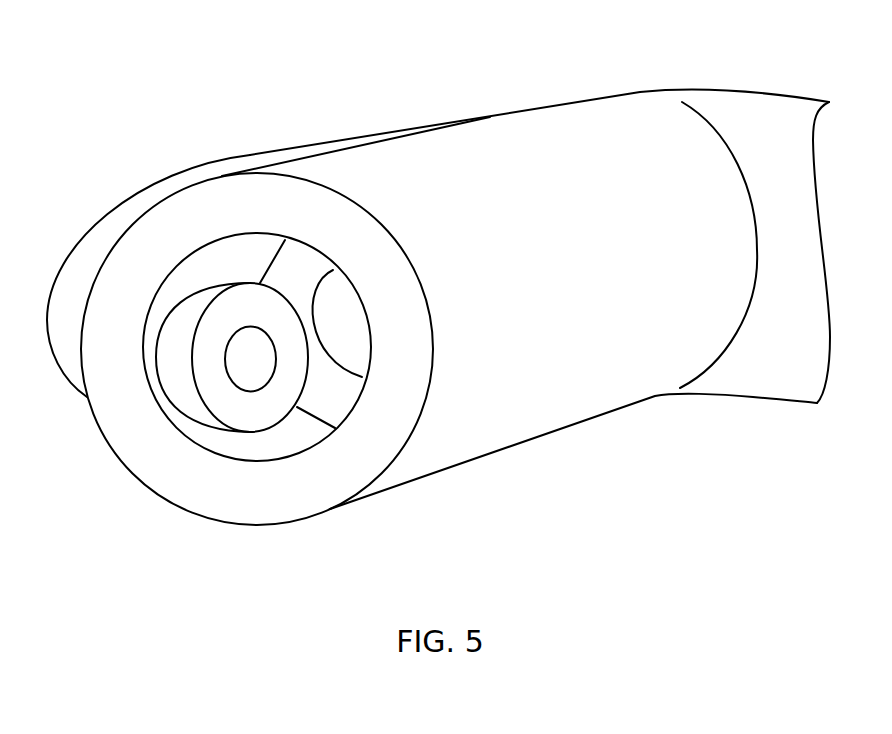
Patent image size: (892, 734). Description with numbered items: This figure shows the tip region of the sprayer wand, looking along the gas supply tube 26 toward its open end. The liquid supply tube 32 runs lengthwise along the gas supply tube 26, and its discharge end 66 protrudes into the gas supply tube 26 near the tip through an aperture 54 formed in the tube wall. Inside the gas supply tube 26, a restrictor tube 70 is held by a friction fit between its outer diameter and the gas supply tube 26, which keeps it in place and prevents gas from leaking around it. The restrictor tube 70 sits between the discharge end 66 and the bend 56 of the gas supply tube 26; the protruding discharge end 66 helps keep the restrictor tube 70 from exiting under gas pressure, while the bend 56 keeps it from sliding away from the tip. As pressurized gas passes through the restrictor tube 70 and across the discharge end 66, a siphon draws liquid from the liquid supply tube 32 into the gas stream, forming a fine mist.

The gas supply tube 26 is at (459, 155).
The liquid supply tube 32 is at (85, 267).
The aperture 54 is at (175, 298).
The bend 56 is at (733, 112).
The discharge end 66 is at (252, 404).
The restrictor tube 70 is at (332, 393).